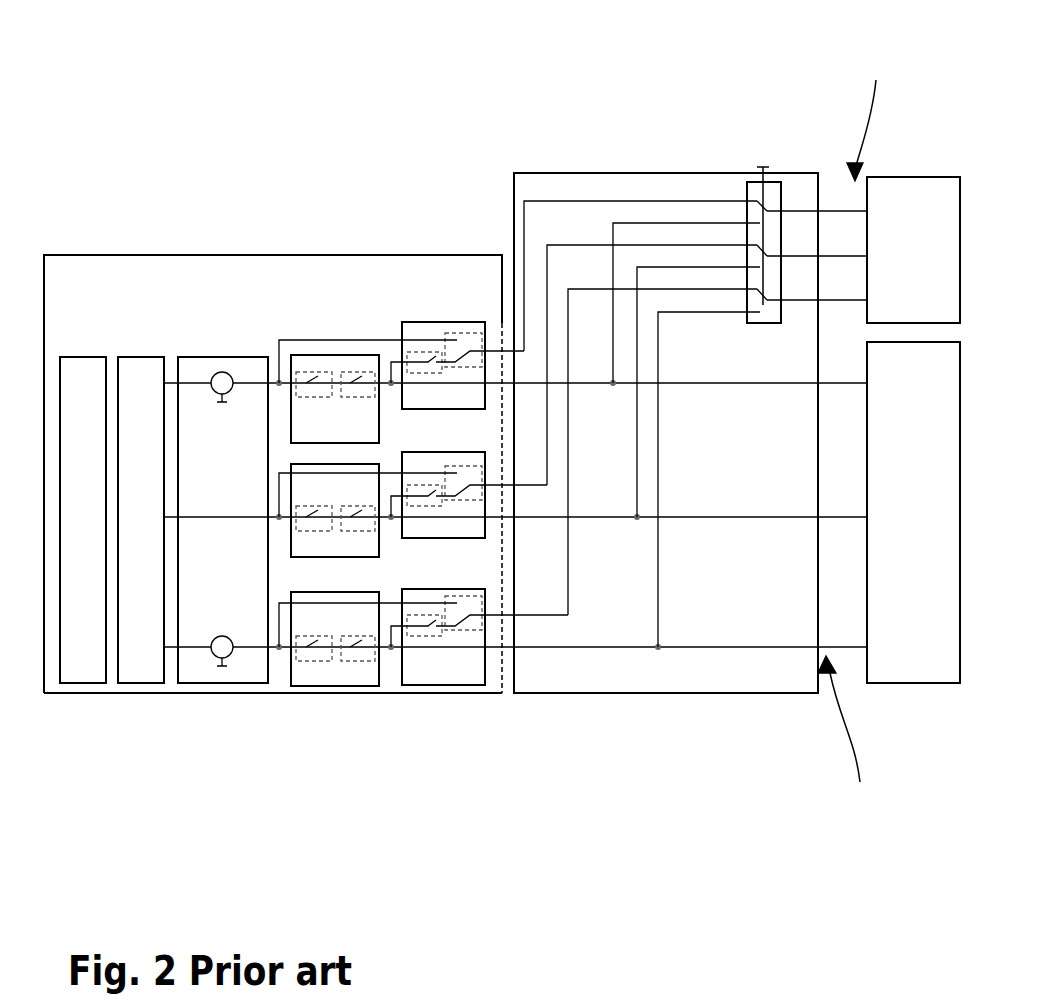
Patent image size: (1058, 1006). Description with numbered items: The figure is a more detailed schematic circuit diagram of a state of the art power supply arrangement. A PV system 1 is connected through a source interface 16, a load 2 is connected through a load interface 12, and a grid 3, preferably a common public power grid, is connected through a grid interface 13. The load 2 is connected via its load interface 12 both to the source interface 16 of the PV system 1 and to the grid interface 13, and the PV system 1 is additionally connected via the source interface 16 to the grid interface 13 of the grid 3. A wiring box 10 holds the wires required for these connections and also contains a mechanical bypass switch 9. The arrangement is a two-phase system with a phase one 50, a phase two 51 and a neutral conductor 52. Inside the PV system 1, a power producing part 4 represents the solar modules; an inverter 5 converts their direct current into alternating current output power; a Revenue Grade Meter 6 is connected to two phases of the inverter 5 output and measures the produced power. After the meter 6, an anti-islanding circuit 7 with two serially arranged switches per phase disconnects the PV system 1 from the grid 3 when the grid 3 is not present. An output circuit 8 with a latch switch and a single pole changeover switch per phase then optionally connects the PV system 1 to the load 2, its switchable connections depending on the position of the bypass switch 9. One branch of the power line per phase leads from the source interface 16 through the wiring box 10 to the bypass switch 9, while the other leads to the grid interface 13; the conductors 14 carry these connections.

The PV system 1 is at (475, 255).
The load 2 is at (897, 177).
The grid 3 is at (910, 683).
The power producing part 4 is at (88, 357).
The inverter 5 is at (146, 357).
The Revenue Grade Meter 6 is at (205, 357).
The anti-islanding circuit 7 is at (352, 355).
The output circuit 8 is at (452, 322).
The mechanical bypass switch 9 is at (755, 190).
The wiring box 10 is at (606, 172).
The load interface 12 is at (868, 115).
The grid interface 13 is at (848, 739).
The current lines 14 is at (546, 648).
The source interface 16 is at (500, 693).
The phase one 50 is at (793, 212).
The phase two 51 is at (827, 255).
The neutral conductor 52 is at (860, 297).